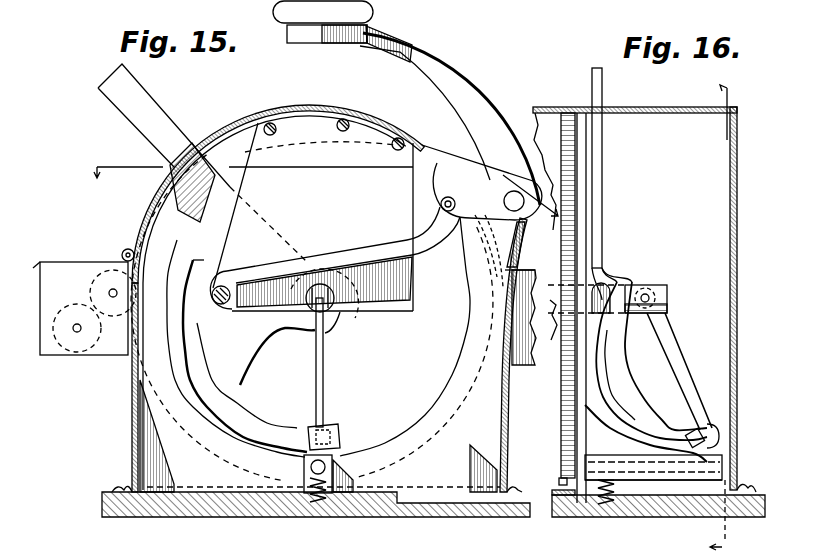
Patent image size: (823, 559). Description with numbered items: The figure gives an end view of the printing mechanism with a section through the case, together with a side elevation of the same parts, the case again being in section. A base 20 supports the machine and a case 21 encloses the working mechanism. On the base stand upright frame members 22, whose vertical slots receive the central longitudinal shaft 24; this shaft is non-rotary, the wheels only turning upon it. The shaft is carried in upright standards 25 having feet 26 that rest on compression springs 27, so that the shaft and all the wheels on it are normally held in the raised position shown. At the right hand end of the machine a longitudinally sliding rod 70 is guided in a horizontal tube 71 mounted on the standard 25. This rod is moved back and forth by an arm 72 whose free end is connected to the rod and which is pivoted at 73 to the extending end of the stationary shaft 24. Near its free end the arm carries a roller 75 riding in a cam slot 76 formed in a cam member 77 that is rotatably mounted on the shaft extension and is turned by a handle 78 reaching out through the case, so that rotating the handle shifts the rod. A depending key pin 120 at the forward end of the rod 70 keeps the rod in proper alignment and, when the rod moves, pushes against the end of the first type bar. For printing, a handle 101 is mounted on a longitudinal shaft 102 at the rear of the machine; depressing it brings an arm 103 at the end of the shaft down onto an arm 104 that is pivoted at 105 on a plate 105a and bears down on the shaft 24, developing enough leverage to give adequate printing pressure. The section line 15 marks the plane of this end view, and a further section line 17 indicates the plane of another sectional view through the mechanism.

In FIG. 16, the section line 15 is at (729, 319).
In FIG. 15, the section line 17 is at (314, 191).
In FIG. 15, the base 20 is at (217, 517).
In FIG. 16, the base 20 is at (658, 503).
In FIG. 15, the case 21 is at (150, 209).
In FIG. 16, the case 21 is at (738, 223).
In FIG. 15, the upright frame member 22 is at (470, 494).
In FIG. 16, the upright frame member 22 is at (588, 152).
In FIG. 15, the central longitudinal shaft 24 is at (346, 310).
In FIG. 16, the central longitudinal shaft 24 is at (630, 284).
In FIG. 16, the upright standard 25 is at (561, 133).
In FIG. 15, the foot 26 is at (277, 490).
In FIG. 16, the foot 26 is at (616, 456).
In FIG. 15, the compression spring 27 is at (308, 468).
In FIG. 16, the compression spring 27 is at (593, 502).
In FIG. 15, the longitudinally sliding rod 70 is at (340, 502).
In FIG. 16, the longitudinally sliding rod 70 is at (625, 481).
In FIG. 15, the horizontal tube 71 is at (335, 456).
In FIG. 16, the horizontal tube 71 is at (670, 480).
In FIG. 15, the arm 72 is at (324, 399).
In FIG. 16, the arm 72 is at (676, 366).
In FIG. 16, the pivot 73 is at (652, 297).
In FIG. 16, the roller 75 is at (697, 428).
In FIG. 16, the cam slot 76 is at (620, 367).
In FIG. 15, the cam member 77 is at (257, 360).
In FIG. 16, the cam member 77 is at (601, 392).
In FIG. 15, the handle 78 is at (167, 107).
In FIG. 16, the handle 78 is at (598, 96).
In FIG. 15, the handle 101 is at (372, 17).
In FIG. 15, the longitudinal shaft 102 is at (527, 190).
In FIG. 15, the arm 103 is at (463, 173).
In FIG. 15, the arm 104 is at (368, 253).
In FIG. 16, the arm 104 is at (598, 247).
In FIG. 15, the pivot 105 is at (221, 306).
In FIG. 15, the plate 105a is at (268, 224).
In FIG. 16, the key pin 120 is at (559, 484).